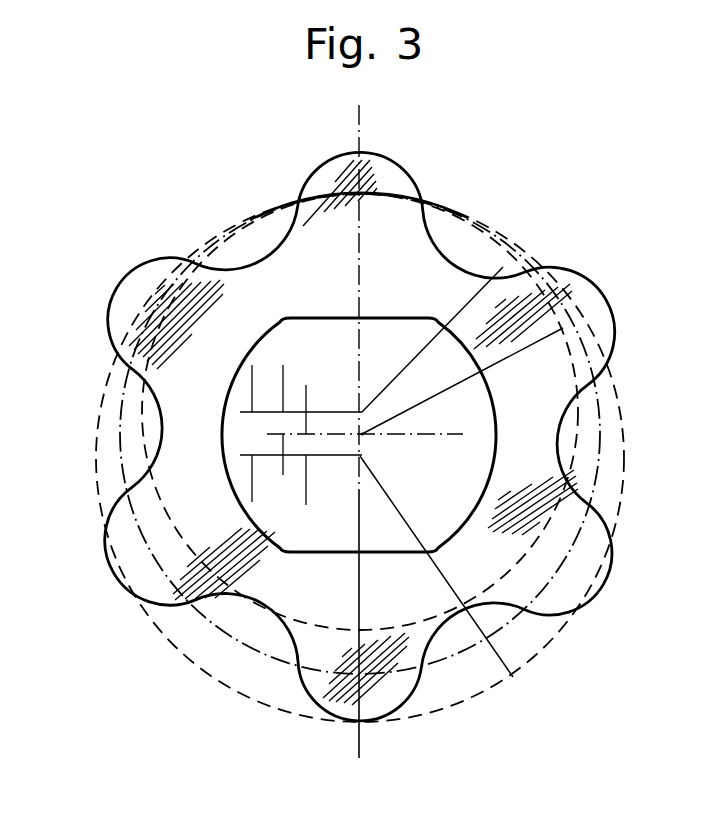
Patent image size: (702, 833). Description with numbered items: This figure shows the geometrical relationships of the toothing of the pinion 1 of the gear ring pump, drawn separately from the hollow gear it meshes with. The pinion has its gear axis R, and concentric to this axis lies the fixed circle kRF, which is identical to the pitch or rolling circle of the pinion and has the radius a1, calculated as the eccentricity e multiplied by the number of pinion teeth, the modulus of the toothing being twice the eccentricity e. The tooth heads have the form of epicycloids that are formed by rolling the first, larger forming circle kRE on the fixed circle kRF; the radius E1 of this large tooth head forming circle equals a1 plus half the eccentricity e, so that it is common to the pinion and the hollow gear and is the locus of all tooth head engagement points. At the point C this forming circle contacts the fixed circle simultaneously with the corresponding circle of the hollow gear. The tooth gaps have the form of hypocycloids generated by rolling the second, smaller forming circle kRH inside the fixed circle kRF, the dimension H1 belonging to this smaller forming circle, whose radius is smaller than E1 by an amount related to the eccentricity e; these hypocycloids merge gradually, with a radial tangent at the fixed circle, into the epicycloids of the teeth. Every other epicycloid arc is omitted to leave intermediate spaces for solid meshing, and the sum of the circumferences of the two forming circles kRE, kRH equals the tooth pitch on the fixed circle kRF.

The inner rotor (gear ring pump rotor) with cycloidal tooth profile 1 is at (260, 292).
The contact point C is at (362, 197).
The radius of circle kRF (root circle) from upper centre H1 is at (428, 335).
The pitch circle radius of the pinion a1 is at (444, 389).
The radius of the large tooth head forming circle E1 is at (453, 597).
The pinion gear axis R is at (364, 434).
The eccentricity e is at (306, 367).
The second forming circle kRH is at (175, 533).
The fixed circle of the pinion kRF is at (247, 650).
The first forming circle kRE is at (453, 703).